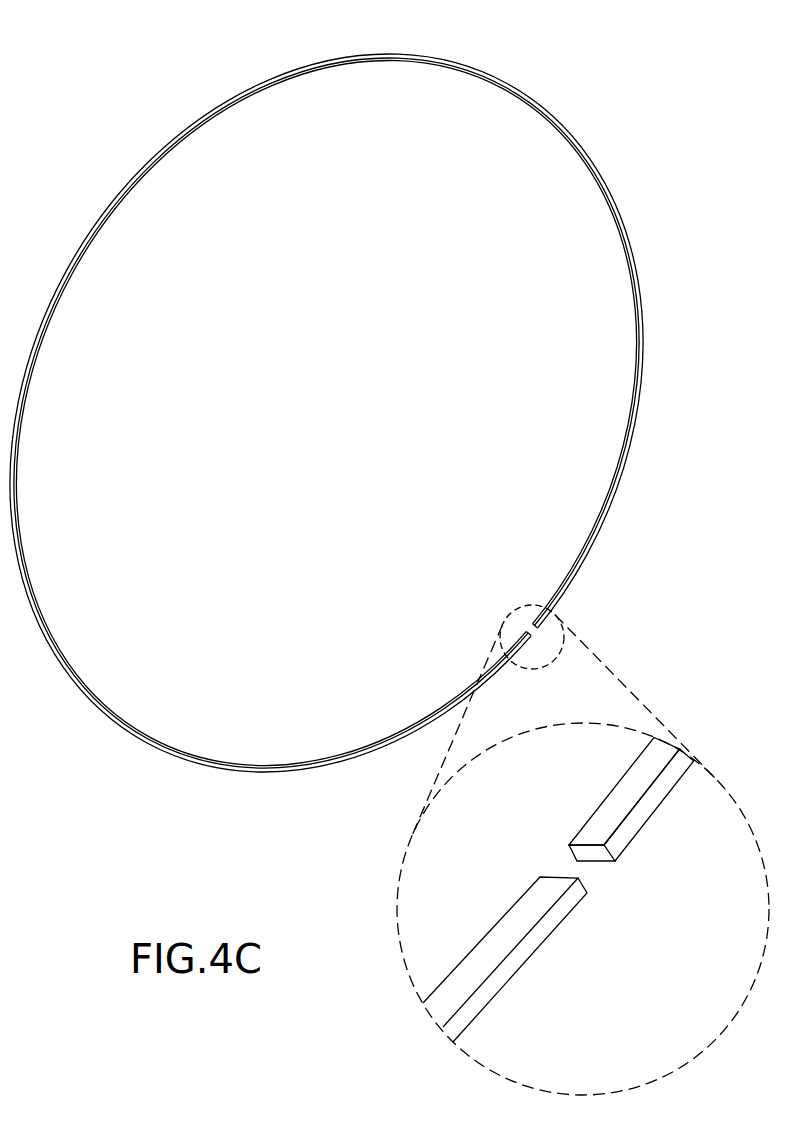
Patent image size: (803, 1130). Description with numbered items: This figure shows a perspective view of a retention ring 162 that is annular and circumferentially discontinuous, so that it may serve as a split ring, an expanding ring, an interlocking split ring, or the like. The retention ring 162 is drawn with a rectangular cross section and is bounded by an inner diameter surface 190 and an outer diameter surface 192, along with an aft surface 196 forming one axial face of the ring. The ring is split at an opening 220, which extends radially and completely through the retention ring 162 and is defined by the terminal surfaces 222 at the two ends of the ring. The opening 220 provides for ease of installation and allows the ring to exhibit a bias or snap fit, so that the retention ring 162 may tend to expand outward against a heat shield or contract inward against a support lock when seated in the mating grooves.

The retention ring 162 is at (140, 63).
The outer diameter surface 192 is at (132, 183).
The inner diameter surface 190 is at (602, 820).
The aft surface 196 is at (622, 838).
The opening 220 is at (538, 856).
The terminal surfaces 222 is at (602, 858).